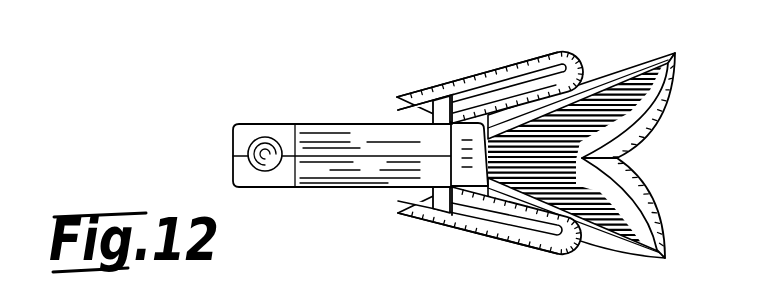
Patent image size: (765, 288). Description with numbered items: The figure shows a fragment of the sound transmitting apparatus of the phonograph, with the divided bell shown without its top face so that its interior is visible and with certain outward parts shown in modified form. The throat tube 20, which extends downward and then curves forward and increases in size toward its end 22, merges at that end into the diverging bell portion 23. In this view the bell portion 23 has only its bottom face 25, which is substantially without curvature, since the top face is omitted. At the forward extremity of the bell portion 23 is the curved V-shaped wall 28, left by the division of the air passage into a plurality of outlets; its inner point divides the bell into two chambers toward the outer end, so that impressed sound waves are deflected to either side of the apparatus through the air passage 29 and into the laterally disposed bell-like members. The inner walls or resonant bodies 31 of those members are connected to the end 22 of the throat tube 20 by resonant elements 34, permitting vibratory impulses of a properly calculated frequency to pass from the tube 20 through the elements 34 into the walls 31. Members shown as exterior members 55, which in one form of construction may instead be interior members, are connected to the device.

The throat tube 20 is at (342, 160).
The end of throat tube 22 is at (437, 135).
The bell portion 23 is at (612, 70).
The bottom face 25 is at (618, 208).
The curved V-shaped wall 28 is at (660, 97).
The air passage 29 is at (267, 163).
The inner walls or resonant bodies 31 is at (490, 73).
The resonant elements 34 is at (433, 101).
The exterior members 55 is at (484, 73).